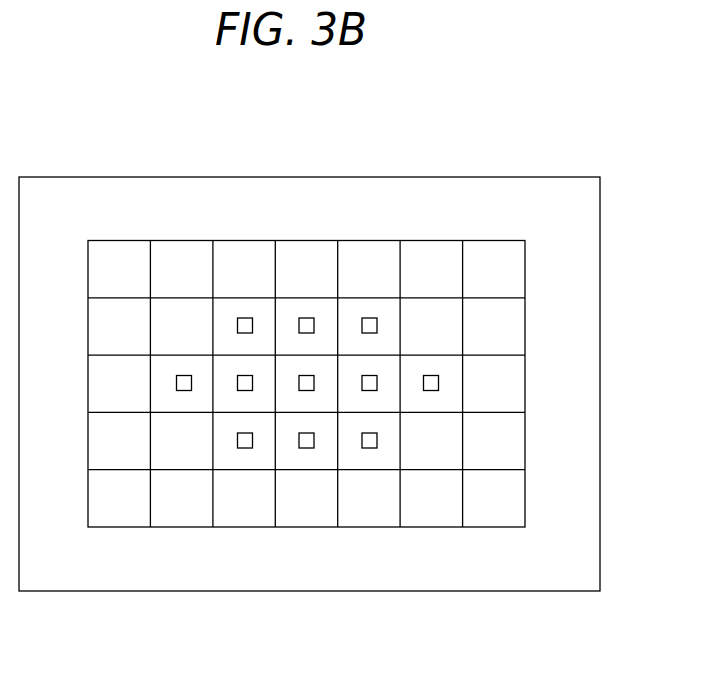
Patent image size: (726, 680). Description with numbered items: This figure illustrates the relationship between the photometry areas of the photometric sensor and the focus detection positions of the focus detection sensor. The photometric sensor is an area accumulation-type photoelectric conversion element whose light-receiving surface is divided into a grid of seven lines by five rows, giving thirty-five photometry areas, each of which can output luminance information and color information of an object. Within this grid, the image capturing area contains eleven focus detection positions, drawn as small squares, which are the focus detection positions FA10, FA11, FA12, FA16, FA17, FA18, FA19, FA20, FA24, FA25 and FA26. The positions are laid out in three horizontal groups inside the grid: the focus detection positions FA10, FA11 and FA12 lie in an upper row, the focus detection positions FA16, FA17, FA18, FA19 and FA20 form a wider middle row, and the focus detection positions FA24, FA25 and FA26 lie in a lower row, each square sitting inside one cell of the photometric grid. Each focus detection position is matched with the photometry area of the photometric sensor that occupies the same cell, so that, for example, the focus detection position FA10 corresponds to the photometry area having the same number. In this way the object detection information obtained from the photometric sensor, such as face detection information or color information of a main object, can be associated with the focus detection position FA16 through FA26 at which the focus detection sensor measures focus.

The focus detection position FA10 is at (243, 318).
The focus detection position FA11 is at (303, 318).
The focus detection position FA12 is at (370, 318).
The focus detection position FA16 is at (177, 377).
The focus detection position FA17 is at (237, 377).
The focus detection position FA18 is at (309, 376).
The focus detection position FA19 is at (370, 377).
The focus detection position FA20 is at (431, 390).
The focus detection position FA24 is at (243, 448).
The focus detection position FA25 is at (305, 448).
The focus detection position FA26 is at (367, 448).